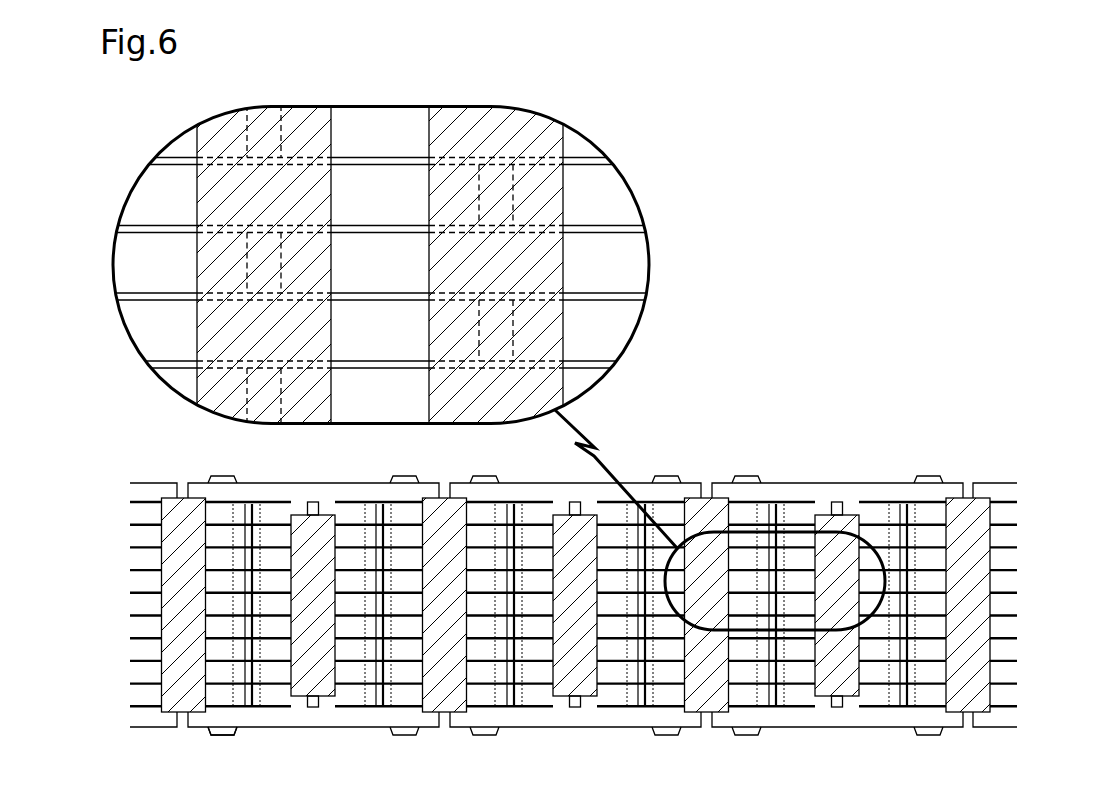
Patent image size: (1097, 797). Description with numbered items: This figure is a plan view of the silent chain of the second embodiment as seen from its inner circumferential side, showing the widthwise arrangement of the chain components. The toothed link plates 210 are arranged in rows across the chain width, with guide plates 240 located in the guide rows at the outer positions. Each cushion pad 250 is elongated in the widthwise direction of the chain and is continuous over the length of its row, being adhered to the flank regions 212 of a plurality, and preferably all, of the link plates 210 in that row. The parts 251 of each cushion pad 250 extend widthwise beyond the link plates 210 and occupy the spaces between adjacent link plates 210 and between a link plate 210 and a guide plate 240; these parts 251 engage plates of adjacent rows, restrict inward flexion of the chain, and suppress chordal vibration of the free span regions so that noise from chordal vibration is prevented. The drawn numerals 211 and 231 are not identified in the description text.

The link plate 210 is at (397, 128).
The unit cell 211 is at (352, 700).
The flank region 212 is at (732, 702).
The fixing protrusion 231 is at (218, 735).
The guide plate 240 is at (250, 497).
The cushion pad 250 is at (313, 133).
The parts of the cushion pad 251 is at (265, 130).